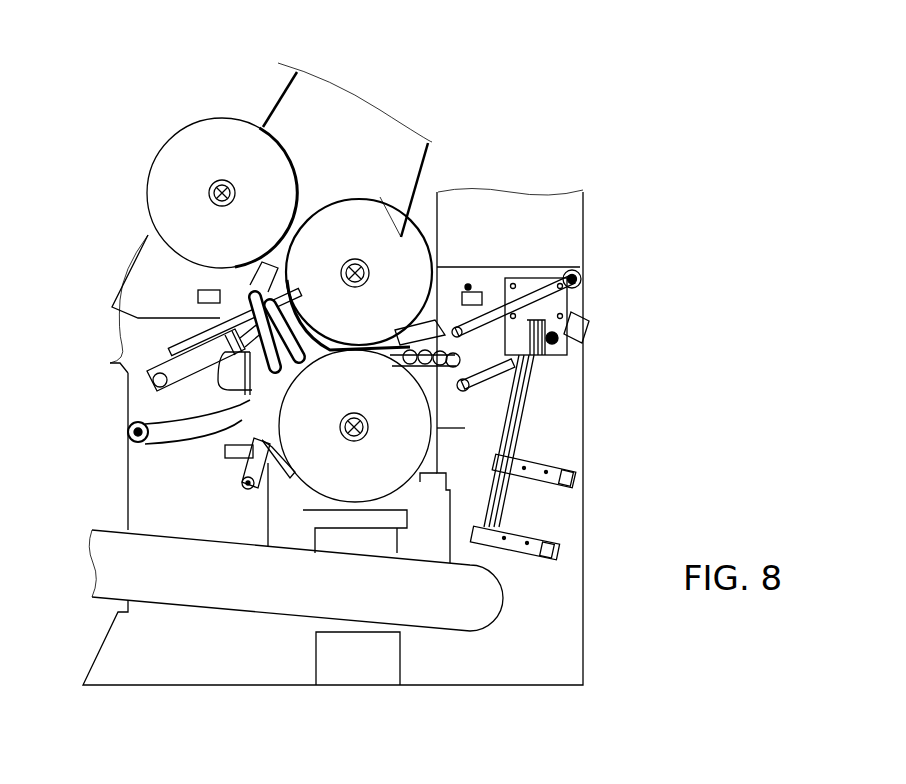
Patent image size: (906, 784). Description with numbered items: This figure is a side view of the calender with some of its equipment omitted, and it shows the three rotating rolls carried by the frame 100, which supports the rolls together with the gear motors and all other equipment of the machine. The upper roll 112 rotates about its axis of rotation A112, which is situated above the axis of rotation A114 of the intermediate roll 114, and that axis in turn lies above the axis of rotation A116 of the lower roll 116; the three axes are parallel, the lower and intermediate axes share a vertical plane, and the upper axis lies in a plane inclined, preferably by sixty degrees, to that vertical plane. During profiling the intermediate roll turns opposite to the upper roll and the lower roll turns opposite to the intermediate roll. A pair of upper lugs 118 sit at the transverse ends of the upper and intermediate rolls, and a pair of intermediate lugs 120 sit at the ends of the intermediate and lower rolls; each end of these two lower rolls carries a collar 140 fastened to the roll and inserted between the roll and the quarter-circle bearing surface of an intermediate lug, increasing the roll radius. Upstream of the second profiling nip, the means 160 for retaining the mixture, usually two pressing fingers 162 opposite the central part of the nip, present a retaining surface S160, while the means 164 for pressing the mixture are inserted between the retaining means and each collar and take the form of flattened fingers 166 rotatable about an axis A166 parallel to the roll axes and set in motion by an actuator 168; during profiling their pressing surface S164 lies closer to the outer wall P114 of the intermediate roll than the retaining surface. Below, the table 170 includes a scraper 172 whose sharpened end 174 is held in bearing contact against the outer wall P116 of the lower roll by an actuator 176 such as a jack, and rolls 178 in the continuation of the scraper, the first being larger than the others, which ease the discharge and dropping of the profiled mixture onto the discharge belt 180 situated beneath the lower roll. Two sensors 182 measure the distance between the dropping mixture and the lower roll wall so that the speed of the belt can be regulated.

The frame 100 is at (568, 660).
The upper roll 112 is at (177, 157).
The axis of rotation of the upper roll A112 is at (209, 207).
The intermediate roll 114 is at (408, 233).
The axis of rotation of the intermediate roll A114 is at (357, 261).
The outer wall of the intermediate roll P114 is at (380, 197).
The lower roll 116 is at (351, 480).
The axis of rotation of the lower roll A116 is at (335, 415).
The outer wall of the lower roll P116 is at (437, 428).
The upper lugs 118 is at (298, 98).
The intermediate lugs 120 is at (262, 405).
The collar 140 is at (422, 228).
The means for retaining the mixture 160 is at (228, 316).
The retaining surface of the retaining means S160 is at (248, 401).
The pressing fingers 162 is at (256, 336).
The means for pressing the mixture 164 is at (288, 368).
The pressing surface of the pressing means S164 is at (292, 303).
The fingers 166 is at (300, 230).
The axis of rotation of the fingers A166 is at (240, 313).
The actuator 168 is at (192, 357).
The table 170 is at (468, 366).
The scraper 172 is at (398, 362).
The sharpened end of the scraper 174 is at (383, 366).
The actuator 176 is at (585, 330).
The rolls of the table 178 is at (462, 321).
The discharge belt 180 is at (261, 597).
The sensors 182 is at (572, 480).